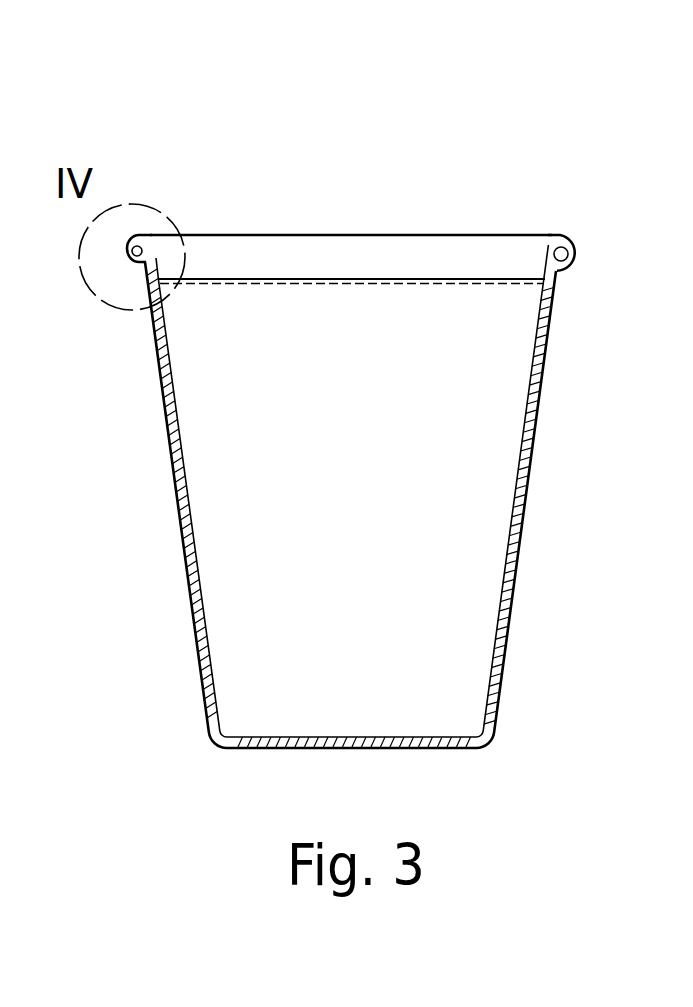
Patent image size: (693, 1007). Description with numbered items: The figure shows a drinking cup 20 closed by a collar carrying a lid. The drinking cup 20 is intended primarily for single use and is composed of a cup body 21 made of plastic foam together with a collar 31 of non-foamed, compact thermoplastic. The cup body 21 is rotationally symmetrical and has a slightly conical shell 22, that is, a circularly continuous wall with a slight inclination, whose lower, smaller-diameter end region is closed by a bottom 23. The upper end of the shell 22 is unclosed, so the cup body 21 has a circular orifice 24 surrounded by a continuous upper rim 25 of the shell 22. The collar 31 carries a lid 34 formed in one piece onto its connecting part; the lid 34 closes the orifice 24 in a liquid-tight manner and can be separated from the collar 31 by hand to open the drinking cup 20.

The drinking cup 20 is at (402, 451).
The cup body 21 is at (362, 550).
The shell 22 is at (535, 448).
The bottom 23 is at (428, 748).
The orifice 24 is at (351, 186).
The upper rim 25 is at (141, 238).
The collar 31 is at (596, 237).
The lid 34 is at (417, 279).